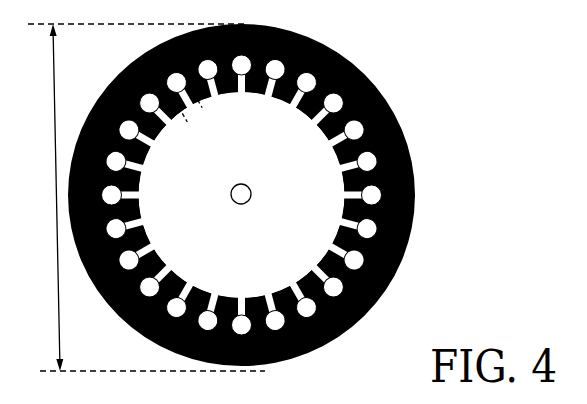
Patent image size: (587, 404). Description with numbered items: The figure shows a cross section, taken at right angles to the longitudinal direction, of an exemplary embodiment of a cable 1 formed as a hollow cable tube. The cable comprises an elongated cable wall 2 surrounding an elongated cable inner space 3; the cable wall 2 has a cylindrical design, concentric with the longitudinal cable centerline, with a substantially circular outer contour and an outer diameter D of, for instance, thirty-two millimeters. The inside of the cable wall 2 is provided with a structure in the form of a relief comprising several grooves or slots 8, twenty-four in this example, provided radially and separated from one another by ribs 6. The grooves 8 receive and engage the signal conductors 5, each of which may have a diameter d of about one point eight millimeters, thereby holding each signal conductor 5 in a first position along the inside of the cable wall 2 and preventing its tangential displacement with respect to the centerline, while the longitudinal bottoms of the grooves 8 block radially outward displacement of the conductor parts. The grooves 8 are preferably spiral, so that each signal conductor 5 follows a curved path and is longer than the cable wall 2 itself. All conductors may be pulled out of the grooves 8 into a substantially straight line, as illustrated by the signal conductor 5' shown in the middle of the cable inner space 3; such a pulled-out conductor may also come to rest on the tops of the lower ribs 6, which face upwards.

The cable 1 is at (261, 195).
The cable wall 2 is at (375, 83).
The cable inner space 3 is at (294, 237).
The signal conductor 5 is at (242, 195).
The signal conductor pulled out to a straight line 5' is at (238, 213).
The rib 6 is at (315, 106).
The groove 8 is at (297, 102).
The signal conductor diameter d is at (213, 100).
The outer diameter D is at (144, 197).